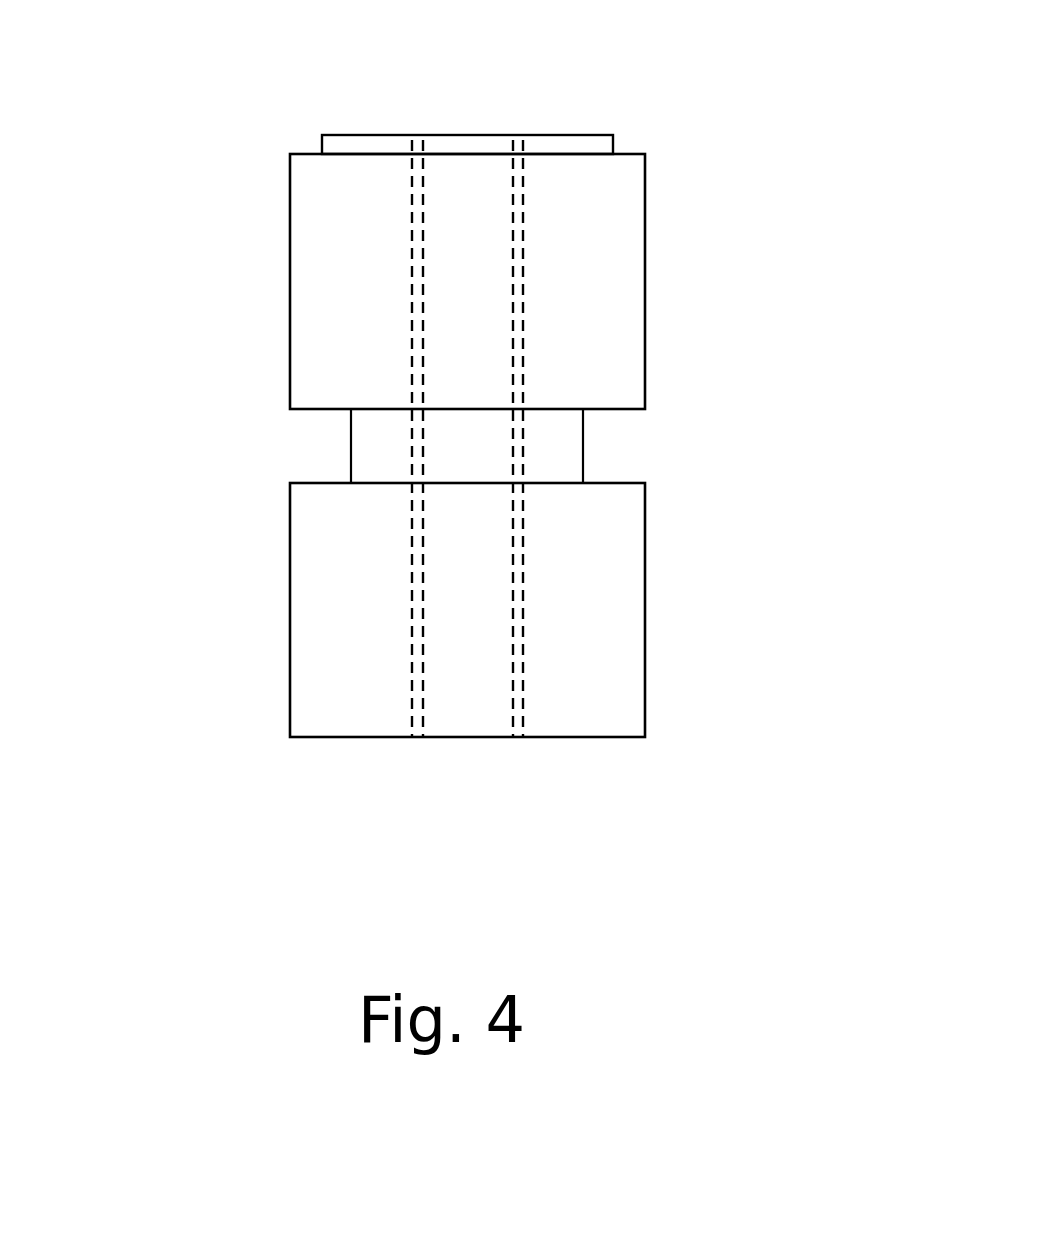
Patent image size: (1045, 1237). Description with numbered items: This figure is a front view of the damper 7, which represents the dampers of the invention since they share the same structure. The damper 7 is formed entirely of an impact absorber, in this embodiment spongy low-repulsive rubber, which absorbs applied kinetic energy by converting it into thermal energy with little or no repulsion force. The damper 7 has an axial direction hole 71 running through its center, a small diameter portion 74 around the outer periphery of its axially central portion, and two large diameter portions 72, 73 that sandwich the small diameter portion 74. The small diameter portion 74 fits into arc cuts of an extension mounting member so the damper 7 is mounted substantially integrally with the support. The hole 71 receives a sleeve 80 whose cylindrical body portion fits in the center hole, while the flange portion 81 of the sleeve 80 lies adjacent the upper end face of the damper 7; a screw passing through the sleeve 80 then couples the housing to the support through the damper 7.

The damper 7 is at (457, 416).
The axial direction hole 71 is at (407, 253).
The large diameter portion 72 is at (325, 322).
The large diameter portion 73 is at (372, 717).
The small diameter portion 74 is at (368, 455).
The sleeve 80 is at (513, 712).
The flange portion 81 is at (562, 147).